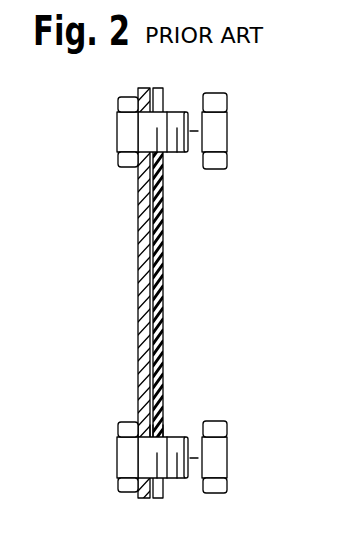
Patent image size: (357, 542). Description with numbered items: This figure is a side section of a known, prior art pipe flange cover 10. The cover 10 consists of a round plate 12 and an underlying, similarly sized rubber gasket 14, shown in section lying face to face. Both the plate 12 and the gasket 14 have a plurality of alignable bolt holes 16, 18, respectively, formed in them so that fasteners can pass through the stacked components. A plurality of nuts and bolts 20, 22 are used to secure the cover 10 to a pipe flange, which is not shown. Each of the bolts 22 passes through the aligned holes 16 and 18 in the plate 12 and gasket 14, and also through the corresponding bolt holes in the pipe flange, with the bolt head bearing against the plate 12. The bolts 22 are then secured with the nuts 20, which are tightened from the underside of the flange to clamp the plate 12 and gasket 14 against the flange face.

The pipe flange cover 10 is at (117, 216).
The round plate 12 is at (140, 265).
The rubber gasket 14 is at (159, 242).
The bolt holes 16 is at (143, 421).
The bolt holes 18 is at (163, 425).
The nuts 20 is at (215, 130).
The bolts 22 is at (127, 130).